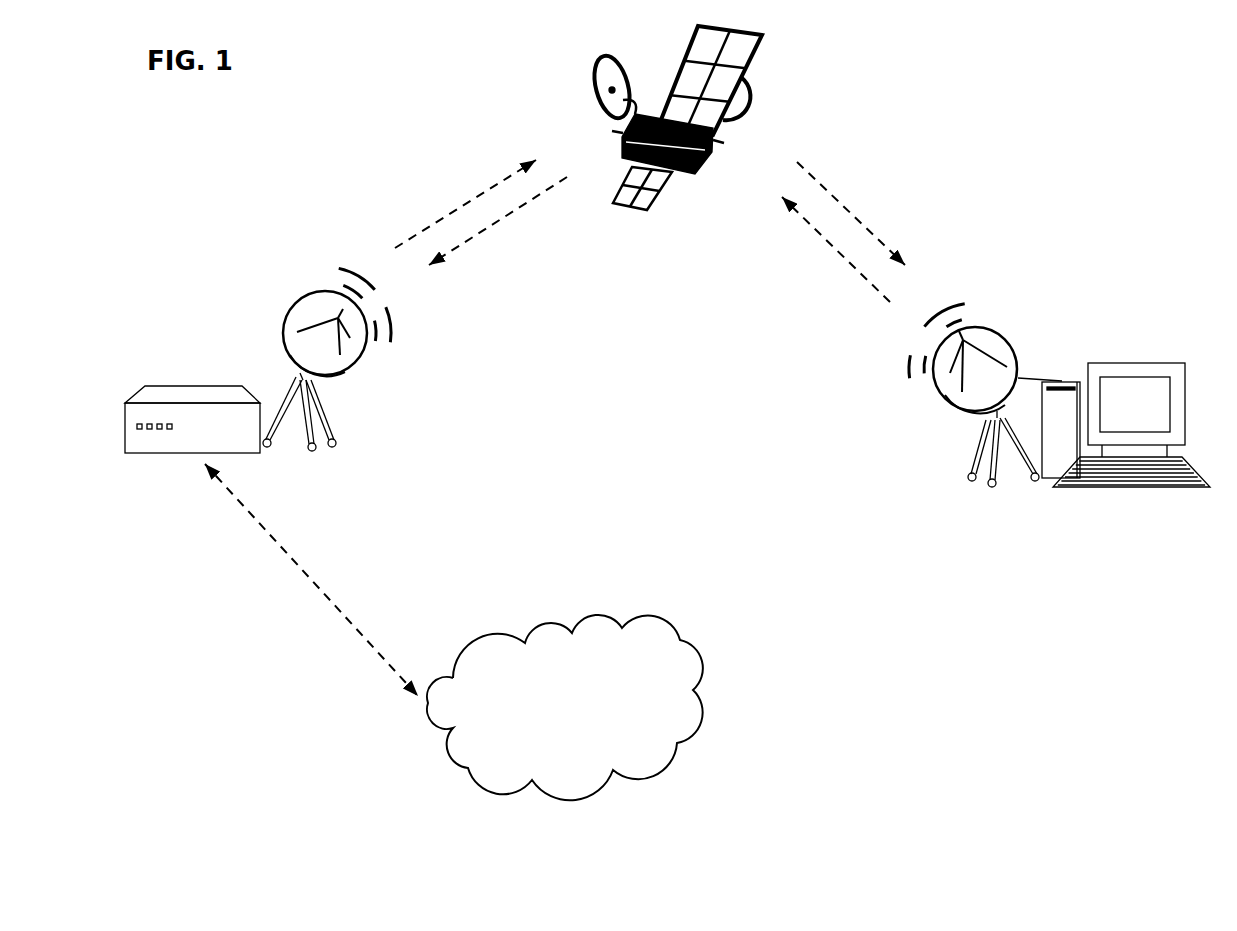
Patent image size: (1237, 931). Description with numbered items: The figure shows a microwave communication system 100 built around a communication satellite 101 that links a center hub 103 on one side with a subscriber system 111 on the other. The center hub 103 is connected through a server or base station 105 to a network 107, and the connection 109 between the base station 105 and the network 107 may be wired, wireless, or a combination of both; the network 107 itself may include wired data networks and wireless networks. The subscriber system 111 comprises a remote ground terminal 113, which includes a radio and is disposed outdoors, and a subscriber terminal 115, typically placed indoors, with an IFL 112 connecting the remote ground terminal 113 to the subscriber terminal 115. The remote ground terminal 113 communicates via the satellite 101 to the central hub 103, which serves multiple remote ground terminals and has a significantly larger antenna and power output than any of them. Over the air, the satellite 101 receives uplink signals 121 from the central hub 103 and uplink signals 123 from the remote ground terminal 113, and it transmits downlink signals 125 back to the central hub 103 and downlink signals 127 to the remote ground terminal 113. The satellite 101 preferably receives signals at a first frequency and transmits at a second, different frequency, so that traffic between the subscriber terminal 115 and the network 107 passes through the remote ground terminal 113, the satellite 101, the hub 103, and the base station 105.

The system 100 is at (297, 128).
The satellite 101 is at (689, 118).
The center hub 103 is at (296, 359).
The server or base station 105 is at (188, 405).
The network 107 is at (576, 701).
The connection 109 is at (311, 580).
The subscriber system 111 is at (1063, 401).
The IFL 112 is at (1061, 301).
The remote ground terminal 113 is at (974, 395).
The subscriber terminal 115 is at (1139, 425).
The uplink signals 121 is at (465, 204).
The uplink signals 123 is at (836, 249).
The downlink signals 125 is at (498, 221).
The downlink signals 127 is at (851, 213).